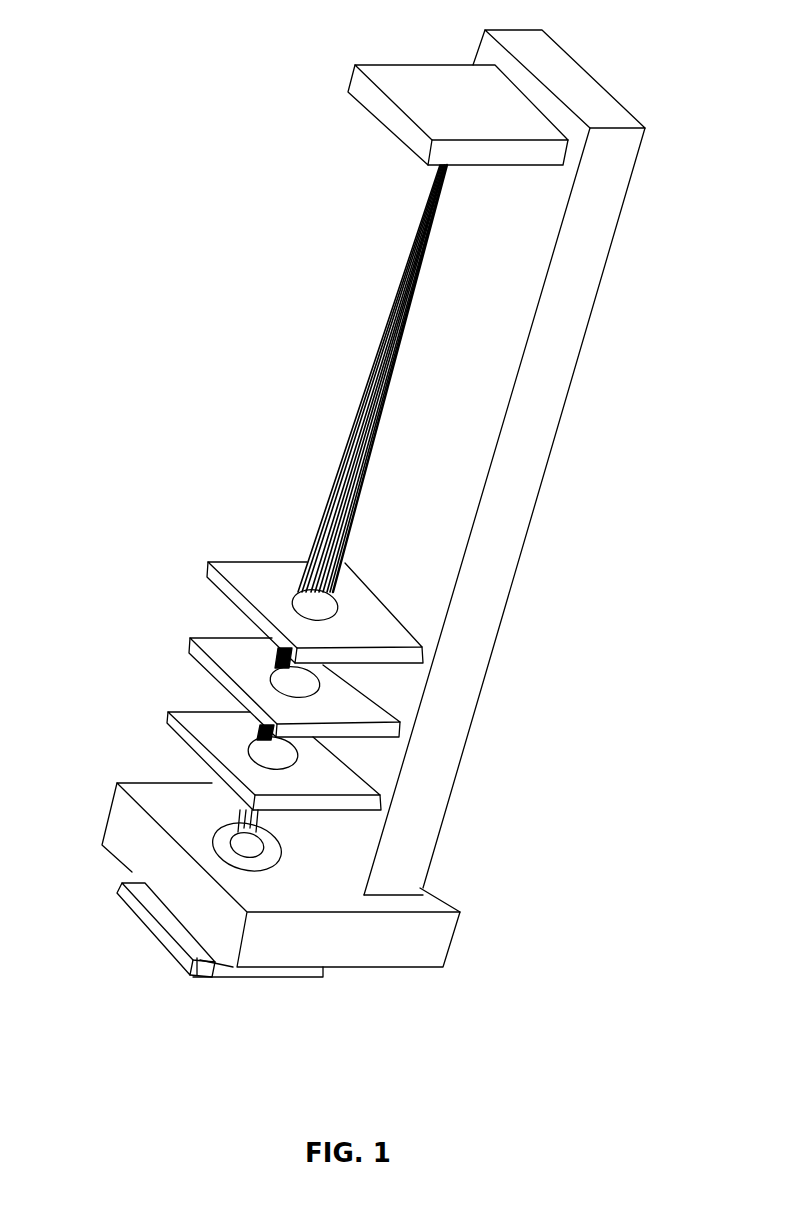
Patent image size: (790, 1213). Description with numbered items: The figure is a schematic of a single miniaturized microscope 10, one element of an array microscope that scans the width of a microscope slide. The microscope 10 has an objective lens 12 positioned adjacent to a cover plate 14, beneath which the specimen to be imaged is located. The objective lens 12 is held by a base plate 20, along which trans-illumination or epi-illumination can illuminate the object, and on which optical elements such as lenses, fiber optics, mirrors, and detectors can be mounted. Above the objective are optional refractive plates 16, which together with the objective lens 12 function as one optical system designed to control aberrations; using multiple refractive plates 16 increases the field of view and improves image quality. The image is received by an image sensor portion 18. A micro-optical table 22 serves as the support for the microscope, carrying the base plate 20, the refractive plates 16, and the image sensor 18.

The miniaturized microscope 10 is at (170, 308).
The objective lens 12 is at (287, 872).
The cover plate 14 is at (150, 940).
The refractive plate 16 is at (183, 642).
The image sensor portion 18 is at (388, 134).
The base plate 20 is at (128, 778).
The micro-optical table 22 is at (523, 582).